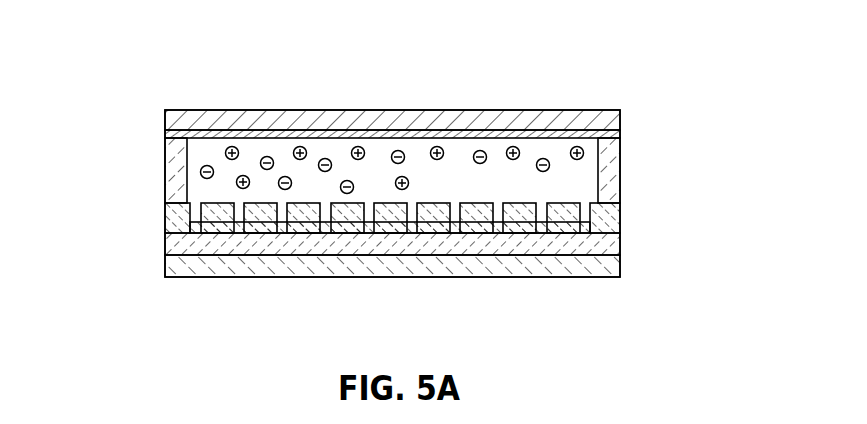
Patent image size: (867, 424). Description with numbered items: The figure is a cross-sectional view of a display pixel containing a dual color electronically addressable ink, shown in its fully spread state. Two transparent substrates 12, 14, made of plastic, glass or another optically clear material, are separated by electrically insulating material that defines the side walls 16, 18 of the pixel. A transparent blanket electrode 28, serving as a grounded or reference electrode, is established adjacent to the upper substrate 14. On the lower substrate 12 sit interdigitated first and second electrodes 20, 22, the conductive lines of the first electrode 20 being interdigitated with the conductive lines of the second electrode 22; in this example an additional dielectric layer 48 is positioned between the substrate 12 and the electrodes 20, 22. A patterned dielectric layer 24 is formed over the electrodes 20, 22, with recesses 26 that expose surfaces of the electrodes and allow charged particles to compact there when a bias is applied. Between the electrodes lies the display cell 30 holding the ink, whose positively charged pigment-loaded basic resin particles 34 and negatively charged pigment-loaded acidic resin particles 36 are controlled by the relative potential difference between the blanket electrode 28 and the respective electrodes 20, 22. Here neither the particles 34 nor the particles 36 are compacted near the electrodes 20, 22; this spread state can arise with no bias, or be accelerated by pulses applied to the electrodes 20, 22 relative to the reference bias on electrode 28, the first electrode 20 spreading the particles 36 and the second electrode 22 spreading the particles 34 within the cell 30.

The transparent substrate 14 is at (596, 120).
The blanket electrode 28 is at (621, 133).
The side wall 16 is at (180, 172).
The side wall 18 is at (618, 163).
The dielectric layer 24 is at (605, 208).
The dielectric layer 48 is at (608, 245).
The transparent substrate 12 is at (607, 267).
The pigment-loaded basic resin particles 34 is at (357, 146).
The pigment-loaded acidic resin particles 36 is at (268, 156).
The display cell 30 is at (337, 142).
The recess 26 is at (453, 197).
The first electrode 20 is at (198, 224).
The second electrode 22 is at (240, 224).